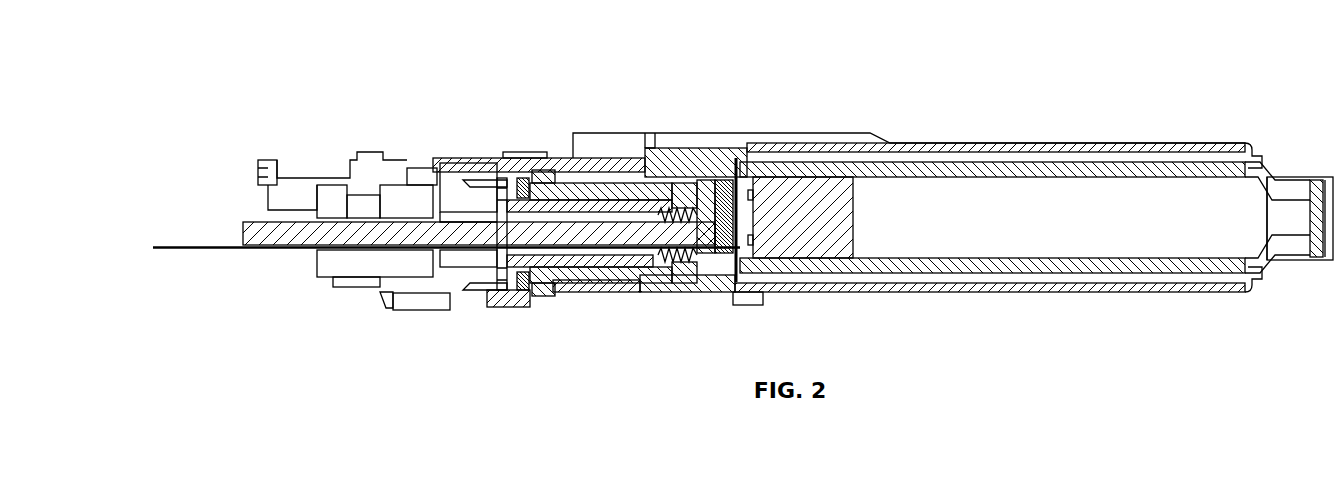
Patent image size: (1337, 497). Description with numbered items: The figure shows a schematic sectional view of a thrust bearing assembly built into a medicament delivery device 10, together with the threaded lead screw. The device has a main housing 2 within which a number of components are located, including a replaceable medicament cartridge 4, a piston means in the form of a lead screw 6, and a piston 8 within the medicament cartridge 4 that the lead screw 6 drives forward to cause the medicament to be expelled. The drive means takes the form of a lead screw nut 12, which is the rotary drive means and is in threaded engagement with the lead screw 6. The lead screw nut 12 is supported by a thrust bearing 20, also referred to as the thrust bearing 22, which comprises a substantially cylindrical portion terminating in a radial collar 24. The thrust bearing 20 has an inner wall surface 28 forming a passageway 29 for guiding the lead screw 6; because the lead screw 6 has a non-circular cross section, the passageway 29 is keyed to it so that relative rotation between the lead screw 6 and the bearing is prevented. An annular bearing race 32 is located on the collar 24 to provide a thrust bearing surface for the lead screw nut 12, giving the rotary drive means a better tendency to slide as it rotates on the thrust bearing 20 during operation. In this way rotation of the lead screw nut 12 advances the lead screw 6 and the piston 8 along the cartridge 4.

The medicament delivery device 10 is at (258, 92).
The main housing 2 is at (703, 140).
The replaceable medicament cartridge 4 is at (970, 220).
The lead screw 6 is at (267, 233).
The piston 8 is at (797, 220).
The lead screw nut 12 is at (590, 188).
The thrust bearing 20 is at (557, 190).
The thrust bearing 22 is at (598, 263).
The radial collar 24 is at (514, 182).
The inner wall surface 28 is at (653, 253).
The passageway 29 is at (652, 237).
The annular bearing race 32 is at (512, 307).